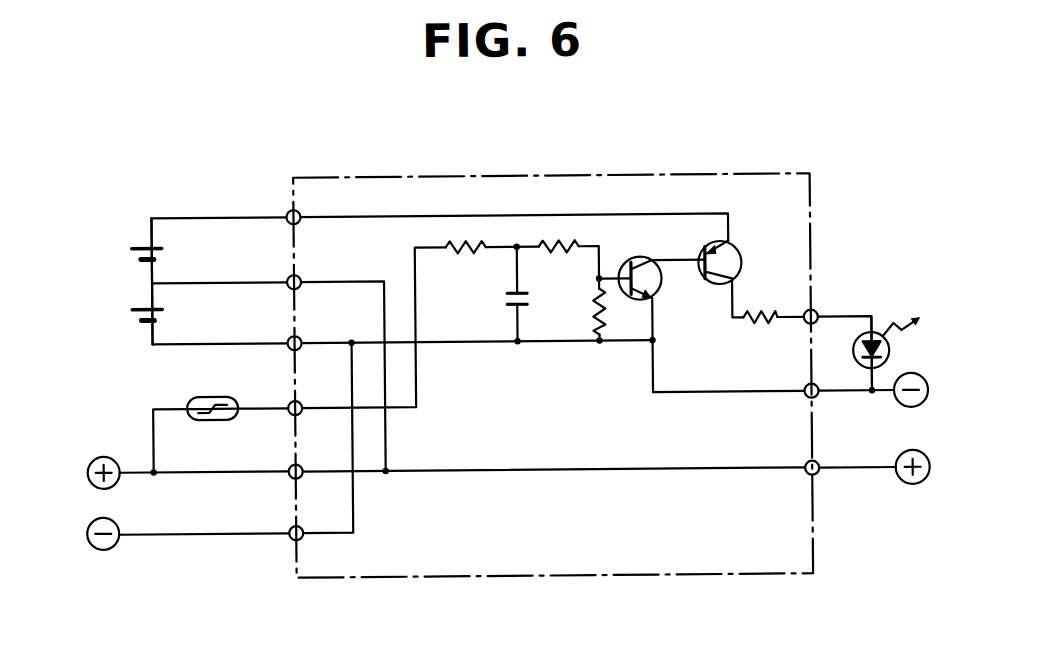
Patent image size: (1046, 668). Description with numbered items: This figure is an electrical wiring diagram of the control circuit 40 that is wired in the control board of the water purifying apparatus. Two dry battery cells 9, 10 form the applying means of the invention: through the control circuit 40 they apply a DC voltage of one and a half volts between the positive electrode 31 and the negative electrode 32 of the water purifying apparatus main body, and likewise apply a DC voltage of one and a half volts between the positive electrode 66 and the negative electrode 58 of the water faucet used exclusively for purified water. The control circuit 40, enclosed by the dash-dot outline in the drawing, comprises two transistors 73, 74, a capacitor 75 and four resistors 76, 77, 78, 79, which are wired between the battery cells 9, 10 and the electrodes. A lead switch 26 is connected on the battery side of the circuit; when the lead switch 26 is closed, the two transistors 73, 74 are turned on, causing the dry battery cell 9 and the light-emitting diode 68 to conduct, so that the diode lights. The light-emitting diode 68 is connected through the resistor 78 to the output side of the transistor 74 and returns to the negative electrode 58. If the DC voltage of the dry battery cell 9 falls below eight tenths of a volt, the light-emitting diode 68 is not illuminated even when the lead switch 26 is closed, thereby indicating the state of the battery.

The dry battery cell 9 is at (141, 240).
The dry battery cell 10 is at (143, 302).
The lead switch 26 is at (207, 393).
The positive electrode 31 is at (106, 451).
The negative electrode 32 is at (107, 549).
The control circuit 40 is at (507, 177).
The negative electrode 58 is at (908, 410).
The positive electrode 66 is at (909, 488).
The light-emitting diode 68 is at (856, 343).
The transistor 73 is at (663, 291).
The transistor 74 is at (738, 250).
The capacitor 75 is at (510, 307).
The resistor 76 is at (468, 242).
The resistor 77 is at (552, 242).
The resistor 78 is at (764, 309).
The resistor 79 is at (592, 318).